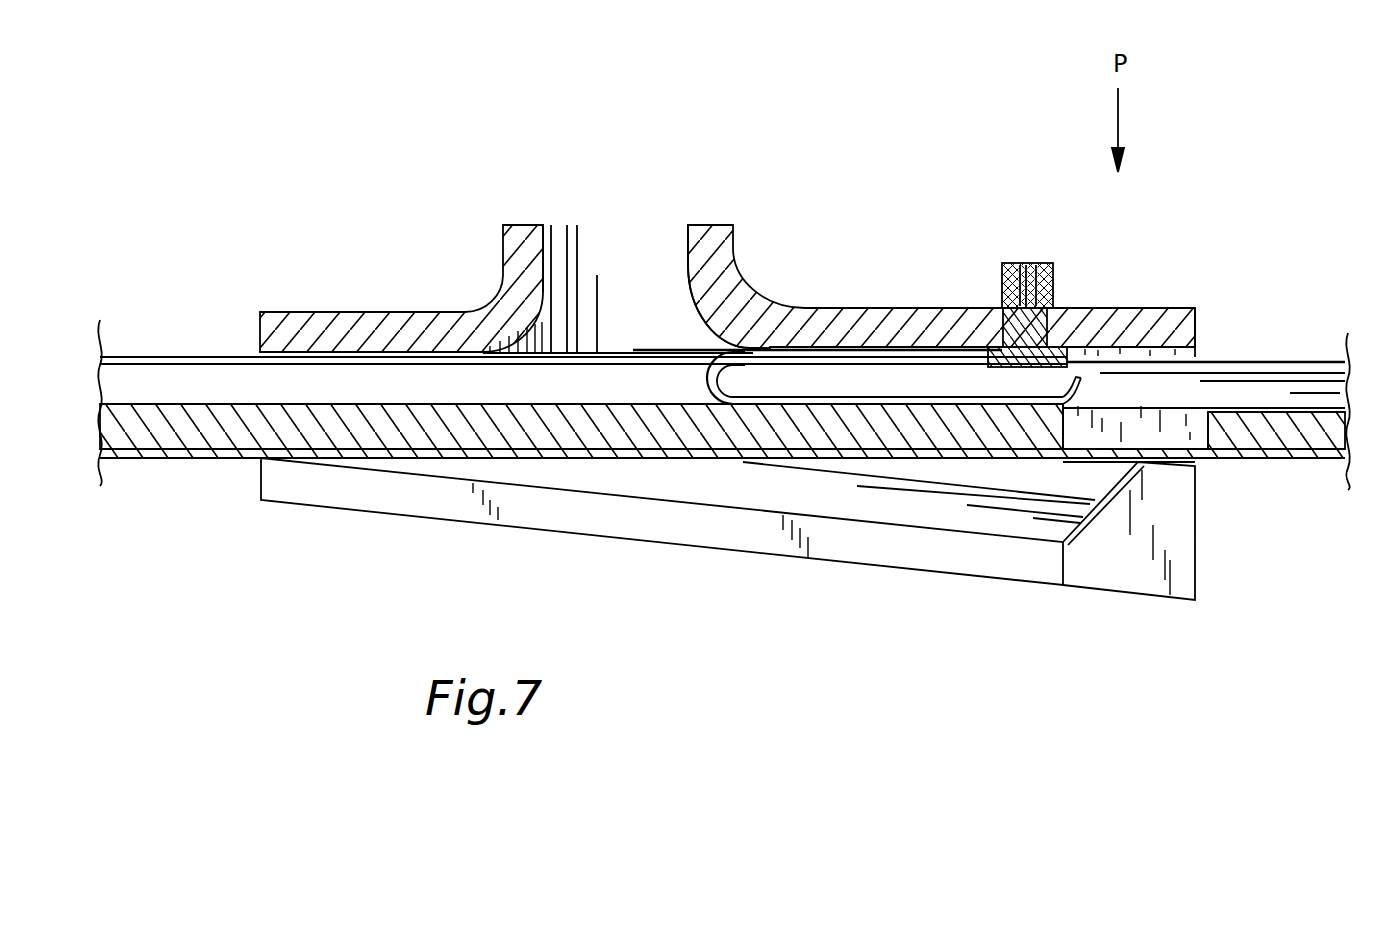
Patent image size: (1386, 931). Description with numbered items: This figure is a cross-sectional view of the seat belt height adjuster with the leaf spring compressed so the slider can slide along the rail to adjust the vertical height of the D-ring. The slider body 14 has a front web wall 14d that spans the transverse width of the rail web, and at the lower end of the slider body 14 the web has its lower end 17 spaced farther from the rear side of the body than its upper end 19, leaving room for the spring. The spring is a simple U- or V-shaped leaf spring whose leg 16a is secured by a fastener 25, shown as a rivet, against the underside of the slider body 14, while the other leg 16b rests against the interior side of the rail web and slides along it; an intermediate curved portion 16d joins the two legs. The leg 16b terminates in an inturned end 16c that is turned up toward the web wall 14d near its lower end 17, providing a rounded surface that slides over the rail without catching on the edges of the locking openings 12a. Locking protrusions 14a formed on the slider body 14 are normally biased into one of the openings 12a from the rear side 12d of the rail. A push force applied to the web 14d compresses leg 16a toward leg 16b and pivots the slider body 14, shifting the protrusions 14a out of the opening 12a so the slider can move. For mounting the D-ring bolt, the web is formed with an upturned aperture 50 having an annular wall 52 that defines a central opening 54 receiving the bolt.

The locking openings 12a is at (1192, 435).
The rear side of the rail 12d is at (1312, 472).
The slider body 14 is at (372, 520).
The locking protrusions 14a is at (1118, 562).
The web wall 14d is at (912, 317).
The spring leg 16a is at (793, 353).
The spring leg 16b is at (792, 406).
The inturned end 16c is at (1085, 393).
The intermediate curved portion 16d is at (706, 379).
The lower end of the web 17 is at (1205, 311).
The upper end of the web 19 is at (248, 320).
The fastener 25 is at (1052, 278).
The upturned aperture 50 is at (547, 200).
The annular wall 52 is at (723, 245).
The central opening 54 is at (638, 247).